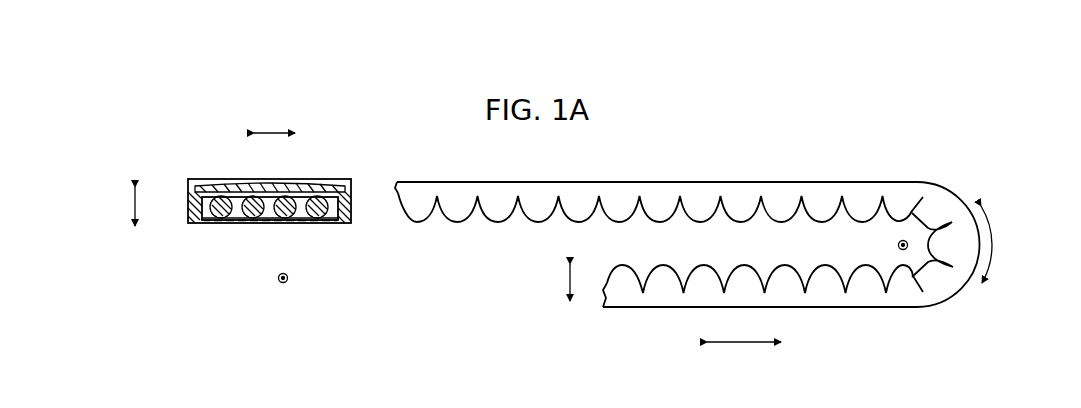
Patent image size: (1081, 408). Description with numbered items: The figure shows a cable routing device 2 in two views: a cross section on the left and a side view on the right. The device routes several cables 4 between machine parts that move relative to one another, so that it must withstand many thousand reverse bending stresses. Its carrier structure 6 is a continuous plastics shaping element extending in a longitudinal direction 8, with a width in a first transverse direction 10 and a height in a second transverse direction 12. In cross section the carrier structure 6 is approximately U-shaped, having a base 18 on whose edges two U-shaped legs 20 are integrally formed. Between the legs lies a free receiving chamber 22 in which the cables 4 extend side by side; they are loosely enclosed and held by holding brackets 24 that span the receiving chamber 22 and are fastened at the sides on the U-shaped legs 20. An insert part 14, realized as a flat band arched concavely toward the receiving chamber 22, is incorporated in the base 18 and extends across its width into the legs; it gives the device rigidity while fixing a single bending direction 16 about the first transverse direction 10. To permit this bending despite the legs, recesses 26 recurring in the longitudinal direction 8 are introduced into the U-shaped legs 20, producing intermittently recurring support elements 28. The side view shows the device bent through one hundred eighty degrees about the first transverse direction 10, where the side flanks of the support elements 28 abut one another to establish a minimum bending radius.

The cable routing device 2 is at (770, 165).
The cables 4 is at (225, 212).
The carrier structure 6 is at (347, 200).
The longitudinal direction 8 is at (288, 282).
The first transverse direction 10 is at (278, 132).
The second transverse direction 12 is at (134, 205).
The insert part 14 is at (233, 187).
The bending direction 16 is at (997, 236).
The base 18 is at (318, 187).
The U-shaped legs 20 is at (188, 208).
The receiving chamber 22 is at (302, 212).
The holding brackets 24 is at (328, 220).
The recesses 26 is at (633, 272).
The support elements 28 is at (663, 280).